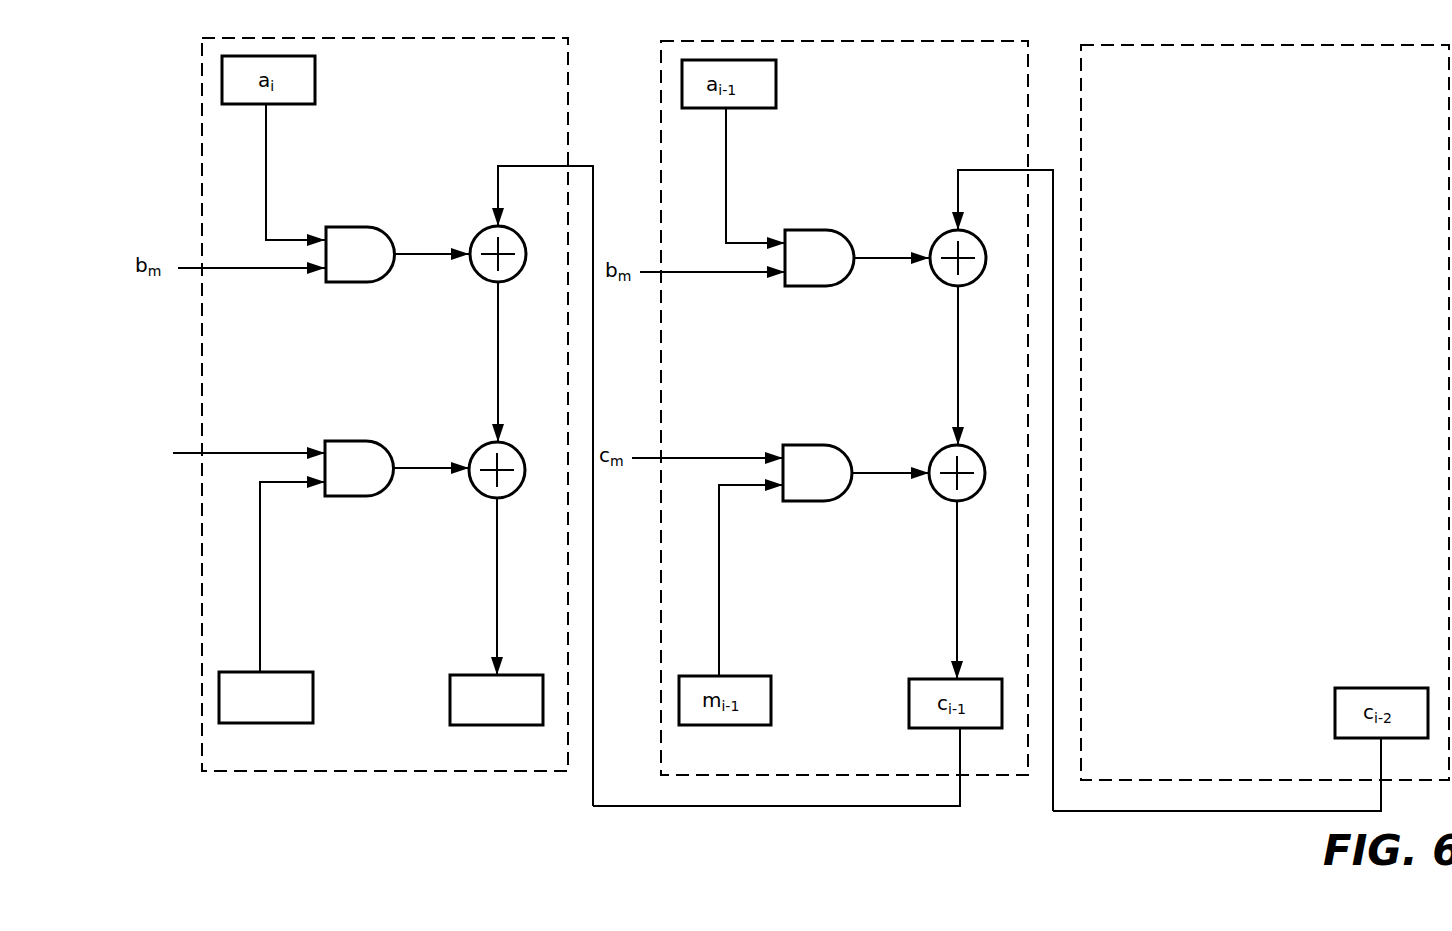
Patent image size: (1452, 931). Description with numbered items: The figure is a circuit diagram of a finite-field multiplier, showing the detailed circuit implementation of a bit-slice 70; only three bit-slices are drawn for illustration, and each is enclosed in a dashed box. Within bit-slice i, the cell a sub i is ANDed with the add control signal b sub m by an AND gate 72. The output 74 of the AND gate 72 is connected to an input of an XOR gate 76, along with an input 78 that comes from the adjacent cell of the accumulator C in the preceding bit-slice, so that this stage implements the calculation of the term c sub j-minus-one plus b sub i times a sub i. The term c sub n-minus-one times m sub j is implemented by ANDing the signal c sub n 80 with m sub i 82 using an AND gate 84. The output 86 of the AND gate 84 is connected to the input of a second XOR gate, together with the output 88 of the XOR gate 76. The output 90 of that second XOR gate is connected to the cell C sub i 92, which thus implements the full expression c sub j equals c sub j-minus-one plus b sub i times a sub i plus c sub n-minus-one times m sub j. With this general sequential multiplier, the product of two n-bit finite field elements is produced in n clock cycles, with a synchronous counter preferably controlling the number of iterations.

The bit-slice 70 is at (443, 38).
The AND gate 72 is at (360, 226).
The output of the AND gate 74 is at (432, 257).
The XOR gate 76 is at (488, 227).
The input from adjacent cell 78 is at (515, 164).
The signal c_n 80 is at (225, 452).
The m_i 82 is at (282, 670).
The AND gate 84 is at (485, 440).
The output of the AND gate 86 is at (430, 470).
The output of XOR gate 88 is at (498, 310).
The output of XOR gate 90 is at (498, 617).
The cell C_i 92 is at (465, 673).